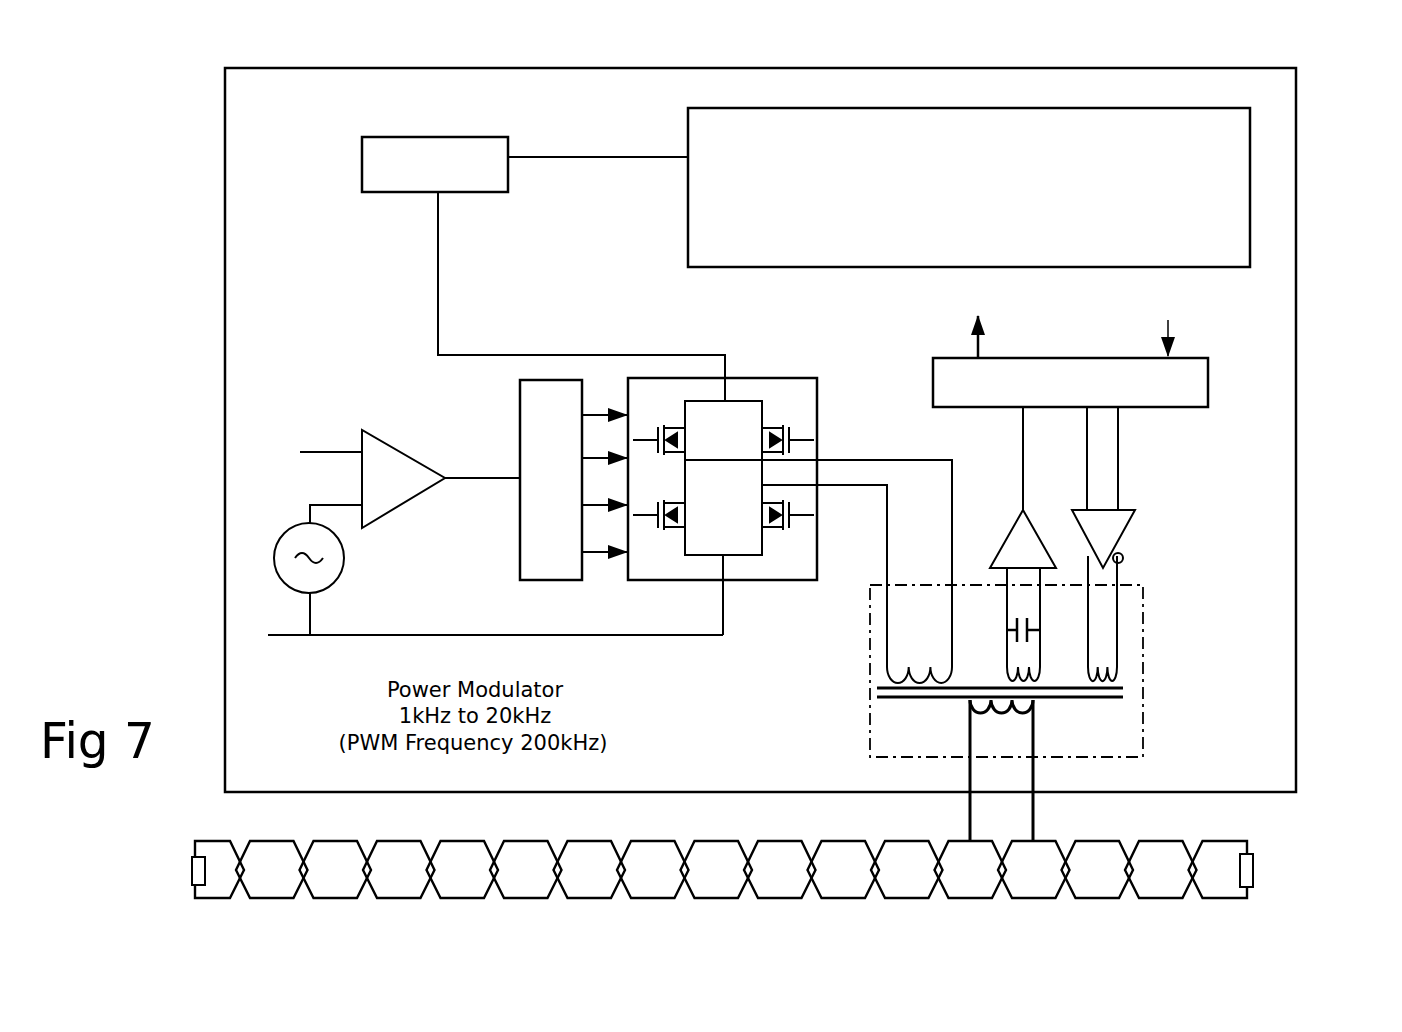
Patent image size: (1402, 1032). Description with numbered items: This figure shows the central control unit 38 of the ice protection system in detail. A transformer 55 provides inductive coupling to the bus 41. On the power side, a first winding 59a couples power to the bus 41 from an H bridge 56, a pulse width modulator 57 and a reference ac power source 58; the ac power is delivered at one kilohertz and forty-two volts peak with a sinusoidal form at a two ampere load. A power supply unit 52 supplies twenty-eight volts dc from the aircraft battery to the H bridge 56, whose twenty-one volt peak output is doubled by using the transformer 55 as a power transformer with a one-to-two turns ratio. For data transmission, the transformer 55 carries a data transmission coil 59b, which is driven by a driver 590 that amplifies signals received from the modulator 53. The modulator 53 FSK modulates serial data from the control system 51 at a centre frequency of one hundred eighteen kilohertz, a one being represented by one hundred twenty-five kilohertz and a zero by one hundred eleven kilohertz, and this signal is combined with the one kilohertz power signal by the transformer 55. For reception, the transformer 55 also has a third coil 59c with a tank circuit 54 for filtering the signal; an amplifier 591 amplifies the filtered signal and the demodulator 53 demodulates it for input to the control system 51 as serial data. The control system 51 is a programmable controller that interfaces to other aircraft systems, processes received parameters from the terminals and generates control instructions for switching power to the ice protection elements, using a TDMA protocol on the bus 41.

The central control unit 38 is at (1298, 368).
The bus 41 is at (1228, 838).
The control system 51 is at (1240, 206).
The power supply unit 52 is at (510, 138).
The modulator/demodulator 53 is at (1208, 378).
The tank circuit 54 is at (1040, 633).
The transformer 55 is at (1145, 730).
The H bridge 56 is at (788, 383).
The pulse width modulator 57 is at (523, 418).
The reference ac power source 58 is at (385, 425).
The first winding 59a is at (893, 653).
The data transmission coil 59b is at (1123, 657).
The third coil 59c is at (1003, 670).
The driver 590 is at (1140, 517).
The amplifier 591 is at (1003, 537).